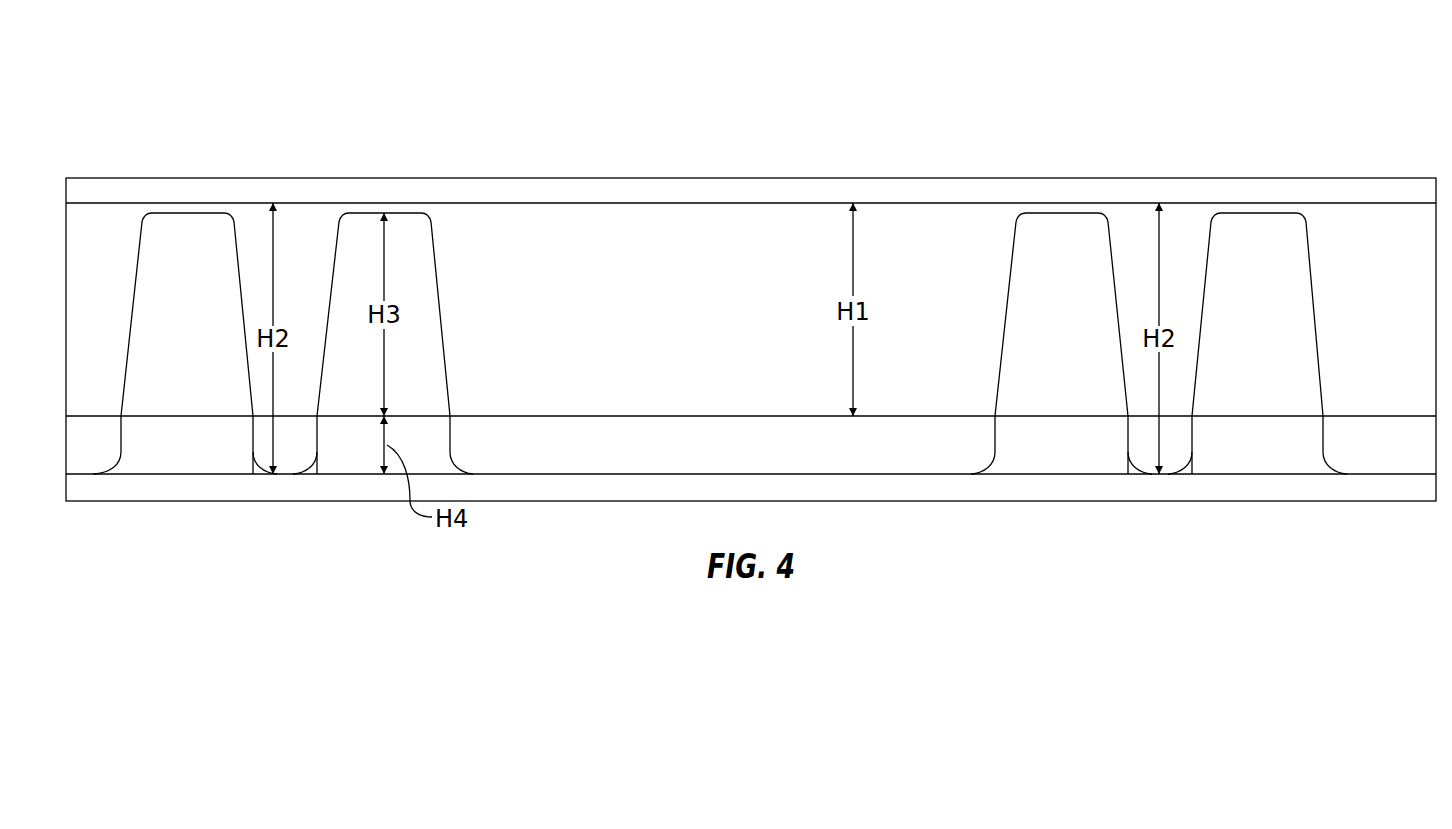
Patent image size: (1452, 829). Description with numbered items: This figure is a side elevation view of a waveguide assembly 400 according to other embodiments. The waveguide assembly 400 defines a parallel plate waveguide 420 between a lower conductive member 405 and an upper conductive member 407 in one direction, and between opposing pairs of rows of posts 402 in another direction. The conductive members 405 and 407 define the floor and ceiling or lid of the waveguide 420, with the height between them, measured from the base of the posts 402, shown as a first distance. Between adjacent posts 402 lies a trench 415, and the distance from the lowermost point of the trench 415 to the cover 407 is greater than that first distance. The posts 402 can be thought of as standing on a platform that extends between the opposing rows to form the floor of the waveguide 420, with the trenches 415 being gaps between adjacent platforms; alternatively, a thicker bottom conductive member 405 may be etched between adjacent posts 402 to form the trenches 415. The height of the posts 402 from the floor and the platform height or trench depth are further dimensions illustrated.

The waveguide assembly 400 is at (1366, 81).
The posts 402 is at (182, 237).
The conductive member 405 is at (750, 480).
The conductive member 407 is at (750, 195).
The trench 415 is at (299, 462).
The waveguide 420 is at (638, 248).